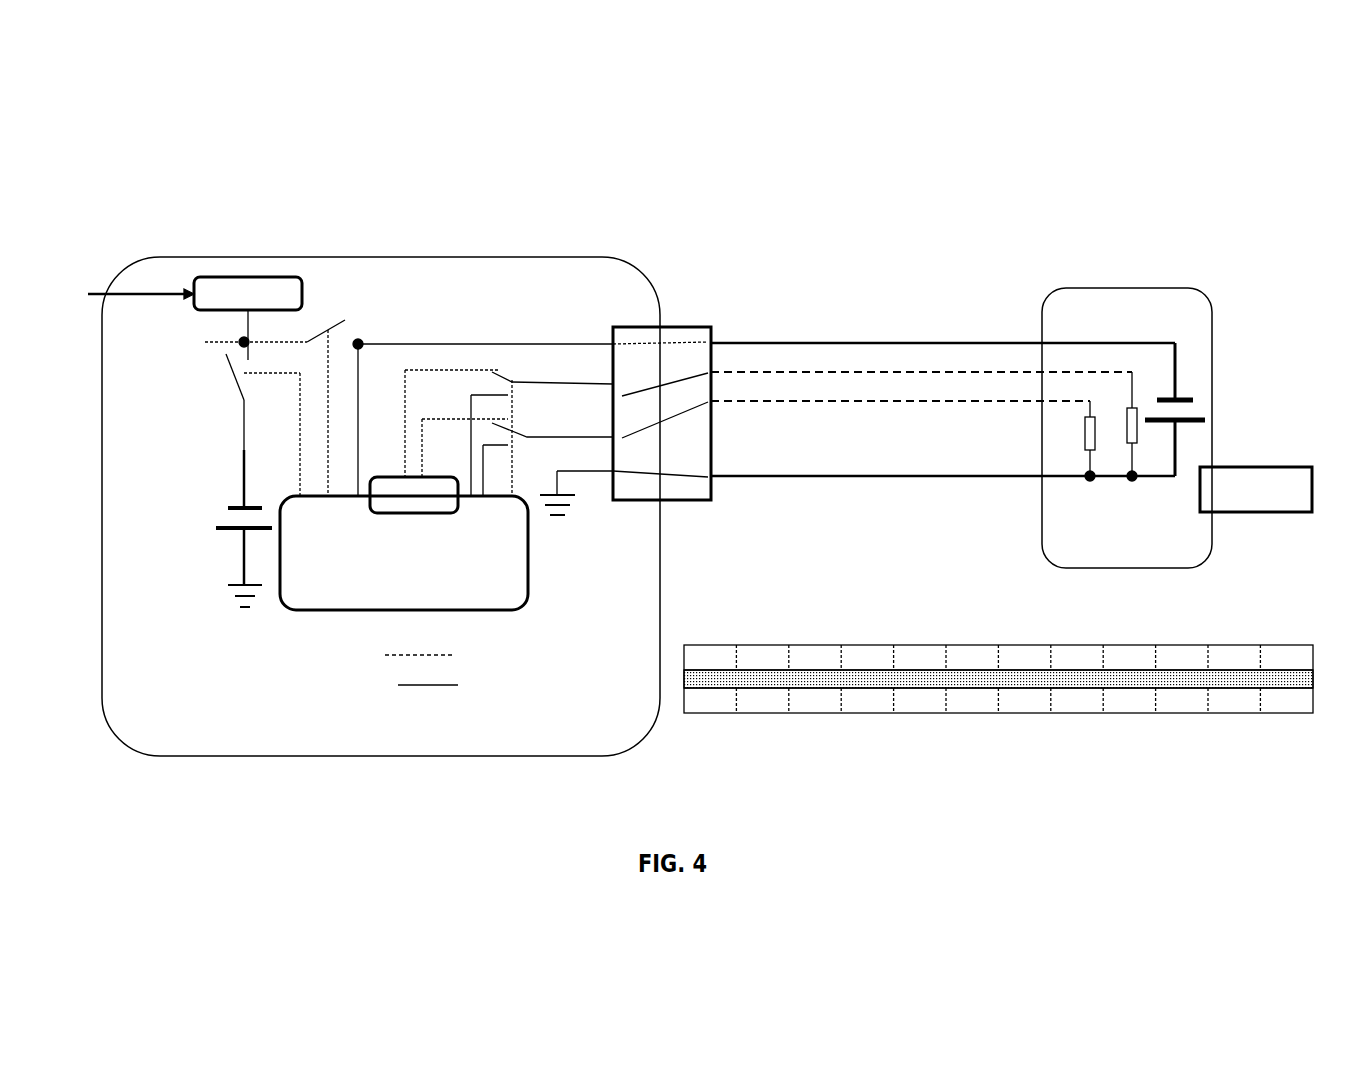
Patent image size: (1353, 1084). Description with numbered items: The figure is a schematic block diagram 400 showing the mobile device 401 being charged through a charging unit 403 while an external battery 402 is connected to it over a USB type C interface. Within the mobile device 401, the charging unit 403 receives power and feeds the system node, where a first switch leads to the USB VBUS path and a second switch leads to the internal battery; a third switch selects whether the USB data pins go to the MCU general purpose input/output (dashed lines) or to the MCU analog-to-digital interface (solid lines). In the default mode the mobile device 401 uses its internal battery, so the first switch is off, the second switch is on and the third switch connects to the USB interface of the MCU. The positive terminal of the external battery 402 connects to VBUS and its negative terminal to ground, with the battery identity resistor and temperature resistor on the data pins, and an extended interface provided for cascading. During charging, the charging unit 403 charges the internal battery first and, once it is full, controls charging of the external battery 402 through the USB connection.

The schematic block diagram 400 is at (1118, 139).
The mobile device 401 is at (536, 252).
The external battery 402 is at (1128, 285).
The charging unit 403 is at (253, 277).